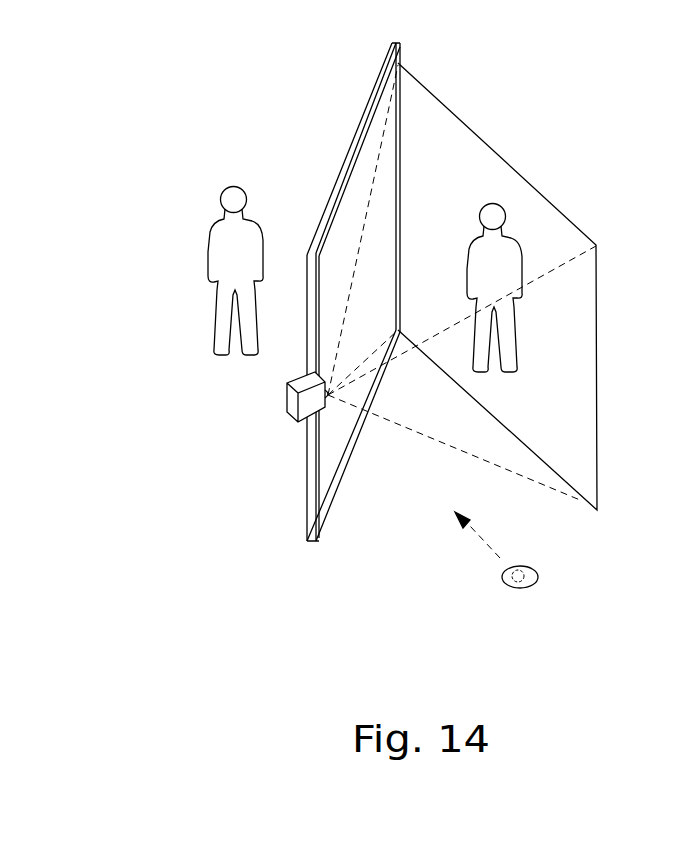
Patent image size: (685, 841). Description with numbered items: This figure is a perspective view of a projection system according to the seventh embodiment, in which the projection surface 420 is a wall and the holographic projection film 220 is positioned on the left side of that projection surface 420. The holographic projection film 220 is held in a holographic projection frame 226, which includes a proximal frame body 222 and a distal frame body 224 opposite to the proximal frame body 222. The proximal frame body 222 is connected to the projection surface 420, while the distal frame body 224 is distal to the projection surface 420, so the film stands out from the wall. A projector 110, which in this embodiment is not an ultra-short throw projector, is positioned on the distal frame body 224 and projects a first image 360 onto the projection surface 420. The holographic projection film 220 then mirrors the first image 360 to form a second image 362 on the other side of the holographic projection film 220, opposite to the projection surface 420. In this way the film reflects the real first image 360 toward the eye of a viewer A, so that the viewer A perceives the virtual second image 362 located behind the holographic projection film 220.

The projector 110 is at (293, 412).
The holographic projection film 220 is at (343, 325).
The proximal frame body 222 is at (403, 108).
The distal frame body 224 is at (307, 352).
The holographic projection frame 226 is at (322, 543).
The first image 360 is at (512, 236).
The second image 362 is at (208, 230).
The projection surface 420 is at (568, 463).
The viewer A is at (518, 588).